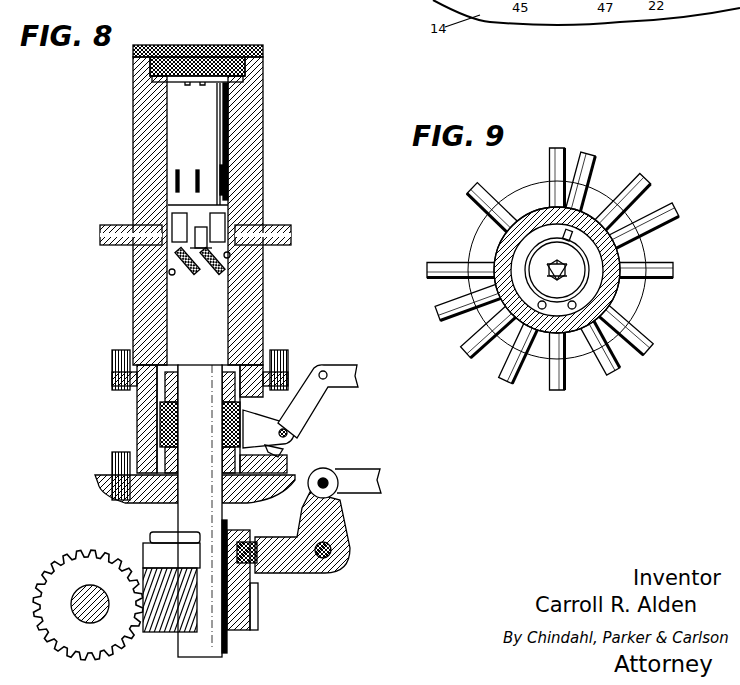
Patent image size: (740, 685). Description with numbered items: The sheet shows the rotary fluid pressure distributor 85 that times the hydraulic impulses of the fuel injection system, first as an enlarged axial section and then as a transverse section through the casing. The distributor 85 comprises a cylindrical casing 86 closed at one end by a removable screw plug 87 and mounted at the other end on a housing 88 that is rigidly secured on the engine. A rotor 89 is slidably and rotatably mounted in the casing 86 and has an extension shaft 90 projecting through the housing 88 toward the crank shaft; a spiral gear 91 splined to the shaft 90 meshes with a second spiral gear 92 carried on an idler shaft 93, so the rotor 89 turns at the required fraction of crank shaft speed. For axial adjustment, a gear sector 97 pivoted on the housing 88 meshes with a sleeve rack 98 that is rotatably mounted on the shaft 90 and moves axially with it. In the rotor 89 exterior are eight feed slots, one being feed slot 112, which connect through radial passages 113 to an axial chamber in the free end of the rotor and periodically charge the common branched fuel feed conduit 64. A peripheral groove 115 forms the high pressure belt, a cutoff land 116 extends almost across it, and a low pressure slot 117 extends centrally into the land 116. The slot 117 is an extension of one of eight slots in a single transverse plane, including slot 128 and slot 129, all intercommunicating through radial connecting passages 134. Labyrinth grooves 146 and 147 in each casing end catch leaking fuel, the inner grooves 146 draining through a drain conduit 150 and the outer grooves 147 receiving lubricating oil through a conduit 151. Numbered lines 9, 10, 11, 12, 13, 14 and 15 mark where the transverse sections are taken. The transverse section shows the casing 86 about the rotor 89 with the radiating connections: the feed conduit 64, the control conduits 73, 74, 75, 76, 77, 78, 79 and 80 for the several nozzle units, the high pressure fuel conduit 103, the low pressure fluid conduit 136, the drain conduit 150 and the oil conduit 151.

In FIG. 8, the distributor 85 is at (265, 160).
In FIG. 8, the cylindrical casing 86 is at (263, 115).
In FIG. 9, the cylindrical casing 86 is at (510, 248).
In FIG. 8, the removable screw plug 87 is at (235, 50).
In FIG. 8, the housing 88 is at (143, 416).
In FIG. 8, the rotor 89 is at (220, 137).
In FIG. 9, the rotor 89 is at (582, 282).
In FIG. 8, the extension shaft 90 is at (187, 515).
In FIG. 8, the spiral gear 91 is at (175, 630).
In FIG. 8, the second spiral gear 92 is at (80, 563).
In FIG. 8, the idler shaft 93 is at (96, 590).
In FIG. 8, the gear sector 97 is at (283, 455).
In FIG. 8, the sleeve rack 98 is at (243, 429).
In FIG. 8, the feed slot 112 is at (200, 168).
In FIG. 8, the radial passage 113 is at (182, 167).
In FIG. 8, the groove 115 is at (216, 196).
In FIG. 8, the cutoff land 116 is at (225, 224).
In FIG. 8, the low pressure slot 117 is at (195, 244).
In FIG. 8, the slot 128 is at (213, 277).
In FIG. 8, the slot 129 is at (195, 275).
In FIG. 8, the radial connecting passage 134 is at (172, 276).
In FIG. 8, the inner labyrinth groove 146 is at (166, 125).
In FIG. 8, the outer labyrinth groove 147 is at (166, 109).
In FIG. 8, the control conduit 75 is at (126, 246).
In FIG. 9, the control conduit 75 is at (437, 282).
In FIG. 8, the control conduit 79 is at (276, 246).
In FIG. 9, the control conduit 79 is at (663, 281).
In FIG. 8, the section line 9— 9 is at (312, 77).
In FIG. 8, the section line 10— 10 is at (315, 176).
In FIG. 8, the section line 11— 11 is at (287, 183).
In FIG. 8, the section line 12— 12 is at (312, 209).
In FIG. 8, the section line 13— 13 is at (308, 235).
In FIG. 8, the section line 14— 14 is at (295, 262).
In FIG. 9, the section line 15— 15 is at (496, 406).
In FIG. 9, the fuel feed conduit 64 is at (453, 318).
In FIG. 9, the control conduit 73 is at (573, 394).
In FIG. 9, the control conduit 74 is at (470, 347).
In FIG. 9, the control conduit 76 is at (497, 198).
In FIG. 9, the control conduit 77 is at (553, 168).
In FIG. 9, the control conduit 78 is at (653, 200).
In FIG. 9, the control conduit 80 is at (643, 331).
In FIG. 9, the high pressure fuel conduit 103 is at (597, 371).
In FIG. 9, the low pressure fluid conduit 136 is at (675, 219).
In FIG. 9, the drain conduit 150 is at (528, 390).
In FIG. 9, the conduit 151 is at (600, 176).